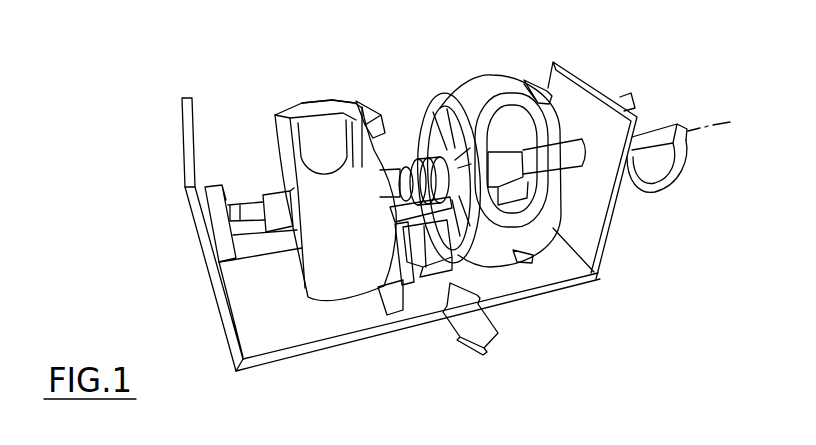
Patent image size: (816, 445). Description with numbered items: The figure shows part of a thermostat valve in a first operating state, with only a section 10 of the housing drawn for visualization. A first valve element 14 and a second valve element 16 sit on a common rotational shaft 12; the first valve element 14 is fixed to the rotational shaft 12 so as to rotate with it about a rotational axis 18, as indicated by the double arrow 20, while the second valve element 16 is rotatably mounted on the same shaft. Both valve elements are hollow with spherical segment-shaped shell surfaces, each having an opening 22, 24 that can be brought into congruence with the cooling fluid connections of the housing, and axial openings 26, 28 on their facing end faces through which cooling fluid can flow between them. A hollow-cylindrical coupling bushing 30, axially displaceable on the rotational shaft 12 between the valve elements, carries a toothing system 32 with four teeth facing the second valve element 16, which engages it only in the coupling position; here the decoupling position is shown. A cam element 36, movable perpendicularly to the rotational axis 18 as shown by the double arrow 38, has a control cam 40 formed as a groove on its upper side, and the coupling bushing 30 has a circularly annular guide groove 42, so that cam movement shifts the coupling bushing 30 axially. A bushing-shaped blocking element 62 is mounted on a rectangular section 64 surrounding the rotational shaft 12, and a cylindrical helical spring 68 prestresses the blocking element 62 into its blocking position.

The section of the housing 10 is at (265, 332).
The rotational shaft 12 is at (650, 137).
The first valve element 14 is at (502, 246).
The second valve element 16 is at (332, 290).
The rotational axis 18 is at (714, 124).
The double arrow 20 is at (662, 185).
The opening 22 is at (510, 100).
The opening 24 is at (362, 135).
The axial opening 26 is at (443, 127).
The axial opening 28 is at (358, 115).
The coupling bushing 30 is at (404, 165).
The toothing system 32 is at (403, 227).
The cam element 36 is at (445, 272).
The double arrow 38 is at (483, 335).
The control cam 40 is at (430, 272).
The guide groove 42 is at (459, 135).
The blocking element 62 is at (282, 202).
The rectangular section 64 is at (237, 205).
The helical spring 68 is at (250, 225).